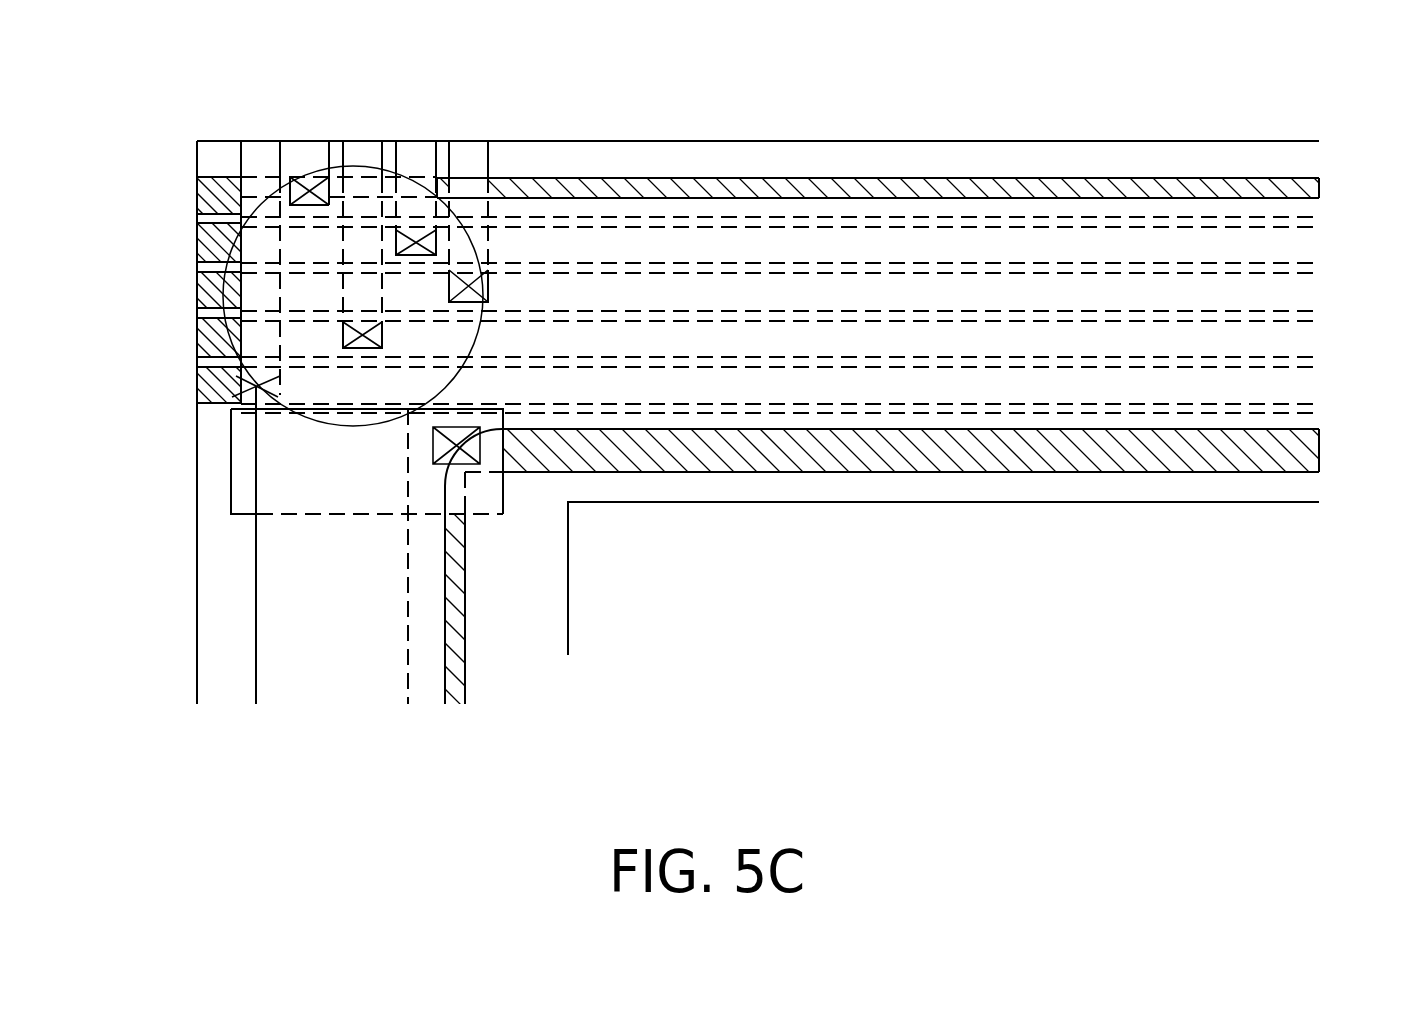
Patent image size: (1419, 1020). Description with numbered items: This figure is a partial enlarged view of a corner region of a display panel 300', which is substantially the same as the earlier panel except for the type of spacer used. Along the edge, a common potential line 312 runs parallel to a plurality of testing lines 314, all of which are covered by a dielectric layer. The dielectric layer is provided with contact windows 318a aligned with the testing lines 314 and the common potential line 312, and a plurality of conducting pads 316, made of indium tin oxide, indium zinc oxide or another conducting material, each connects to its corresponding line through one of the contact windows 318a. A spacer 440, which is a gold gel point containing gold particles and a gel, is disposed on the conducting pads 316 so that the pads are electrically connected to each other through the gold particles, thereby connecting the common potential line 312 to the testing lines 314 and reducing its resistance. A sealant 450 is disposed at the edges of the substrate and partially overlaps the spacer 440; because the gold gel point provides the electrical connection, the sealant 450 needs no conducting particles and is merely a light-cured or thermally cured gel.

The common potential line 312 is at (1328, 413).
The testing lines 314 is at (186, 177).
The conducting pads 316 is at (241, 158).
The contact windows 318a is at (432, 239).
The spacer 440 is at (380, 423).
The sealant 450 is at (448, 713).
The display panel 300' is at (1307, 631).